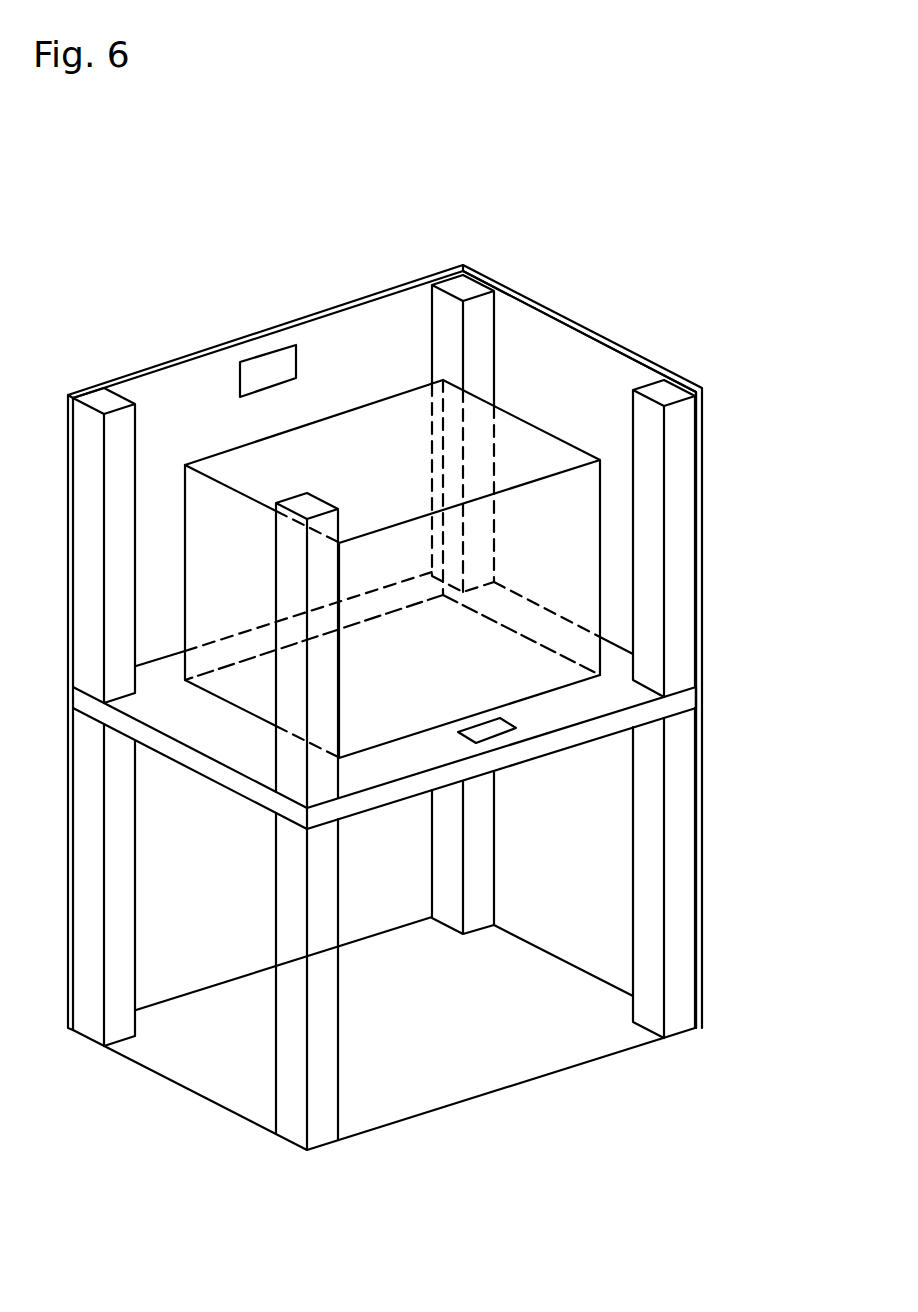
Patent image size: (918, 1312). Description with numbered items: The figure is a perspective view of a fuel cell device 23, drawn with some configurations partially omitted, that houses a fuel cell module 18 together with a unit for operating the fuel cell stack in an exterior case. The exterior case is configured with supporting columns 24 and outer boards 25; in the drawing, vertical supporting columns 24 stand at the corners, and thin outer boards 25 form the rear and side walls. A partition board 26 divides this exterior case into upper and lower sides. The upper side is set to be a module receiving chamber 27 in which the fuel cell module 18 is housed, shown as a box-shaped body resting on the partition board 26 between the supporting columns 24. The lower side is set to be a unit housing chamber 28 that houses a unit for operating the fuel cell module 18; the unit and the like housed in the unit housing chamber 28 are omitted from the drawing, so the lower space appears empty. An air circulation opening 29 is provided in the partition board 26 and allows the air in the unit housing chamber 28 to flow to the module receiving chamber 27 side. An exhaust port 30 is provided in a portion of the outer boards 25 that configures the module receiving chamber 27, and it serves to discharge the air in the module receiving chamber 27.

The fuel cell module 18 is at (530, 440).
The fuel cell device 23 is at (266, 154).
The supporting column 24 is at (105, 393).
The outer board 25 is at (517, 293).
The partition board 26 is at (680, 690).
The module receiving chamber 27 is at (543, 360).
The unit housing chamber 28 is at (250, 1073).
The air circulation opening 29 is at (500, 728).
The exhaust port 30 is at (258, 368).